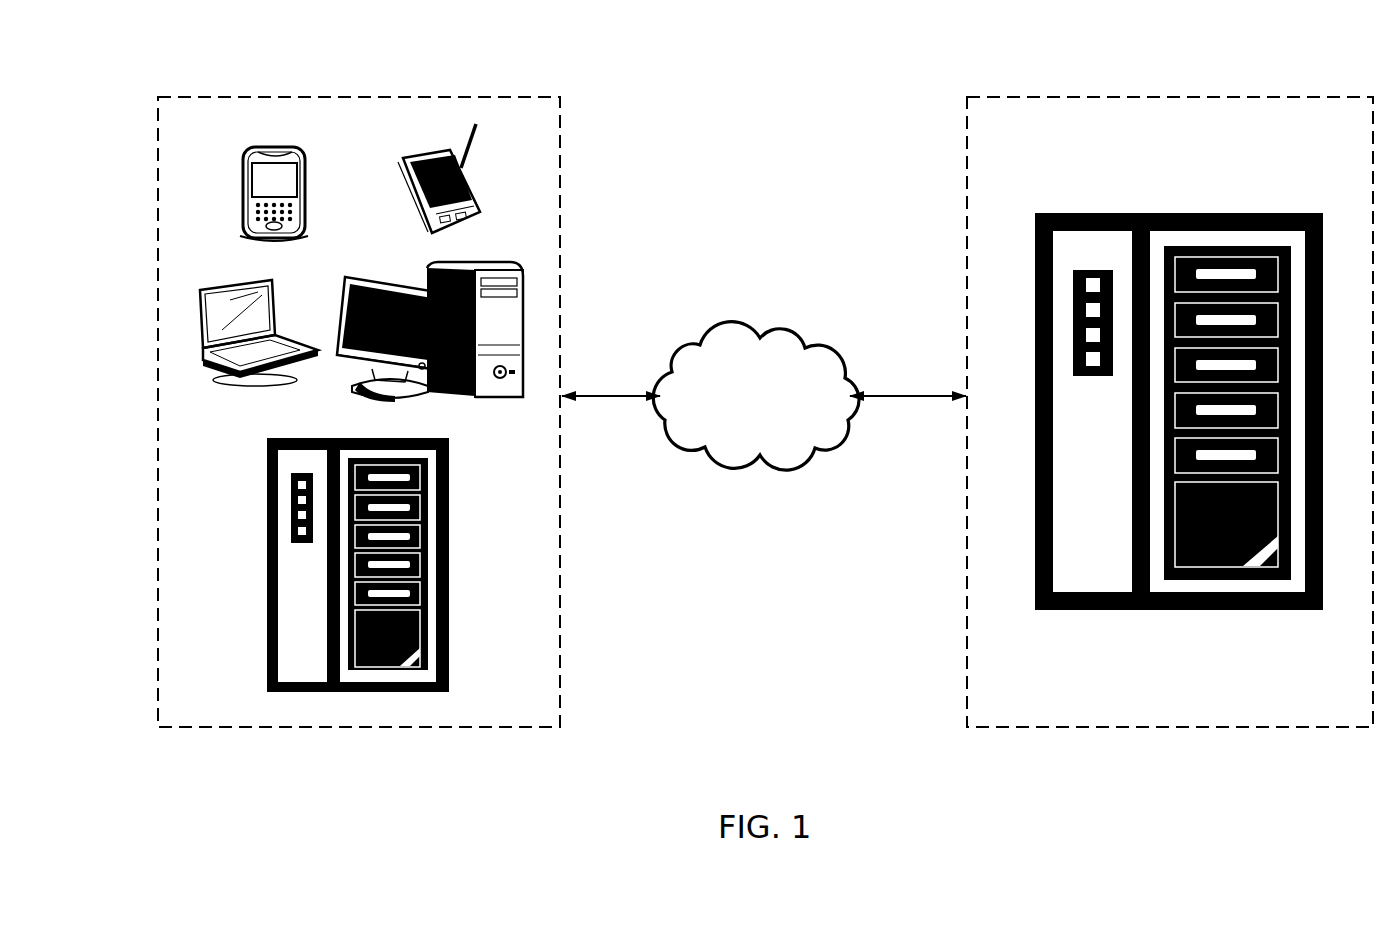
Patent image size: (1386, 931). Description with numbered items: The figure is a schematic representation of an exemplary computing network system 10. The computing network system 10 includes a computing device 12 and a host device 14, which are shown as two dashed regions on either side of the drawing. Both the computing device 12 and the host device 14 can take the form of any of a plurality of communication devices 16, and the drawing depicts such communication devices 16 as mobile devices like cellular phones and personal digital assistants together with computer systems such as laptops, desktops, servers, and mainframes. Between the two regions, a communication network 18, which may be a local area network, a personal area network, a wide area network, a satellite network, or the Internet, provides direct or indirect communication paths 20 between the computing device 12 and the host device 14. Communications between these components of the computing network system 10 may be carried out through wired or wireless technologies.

The computing network system 10 is at (745, 162).
The computing device 12 is at (561, 230).
The host device 14 is at (967, 230).
The communication devices 16 is at (282, 297).
The communication network 18 is at (797, 340).
The communication paths 20 is at (612, 397).